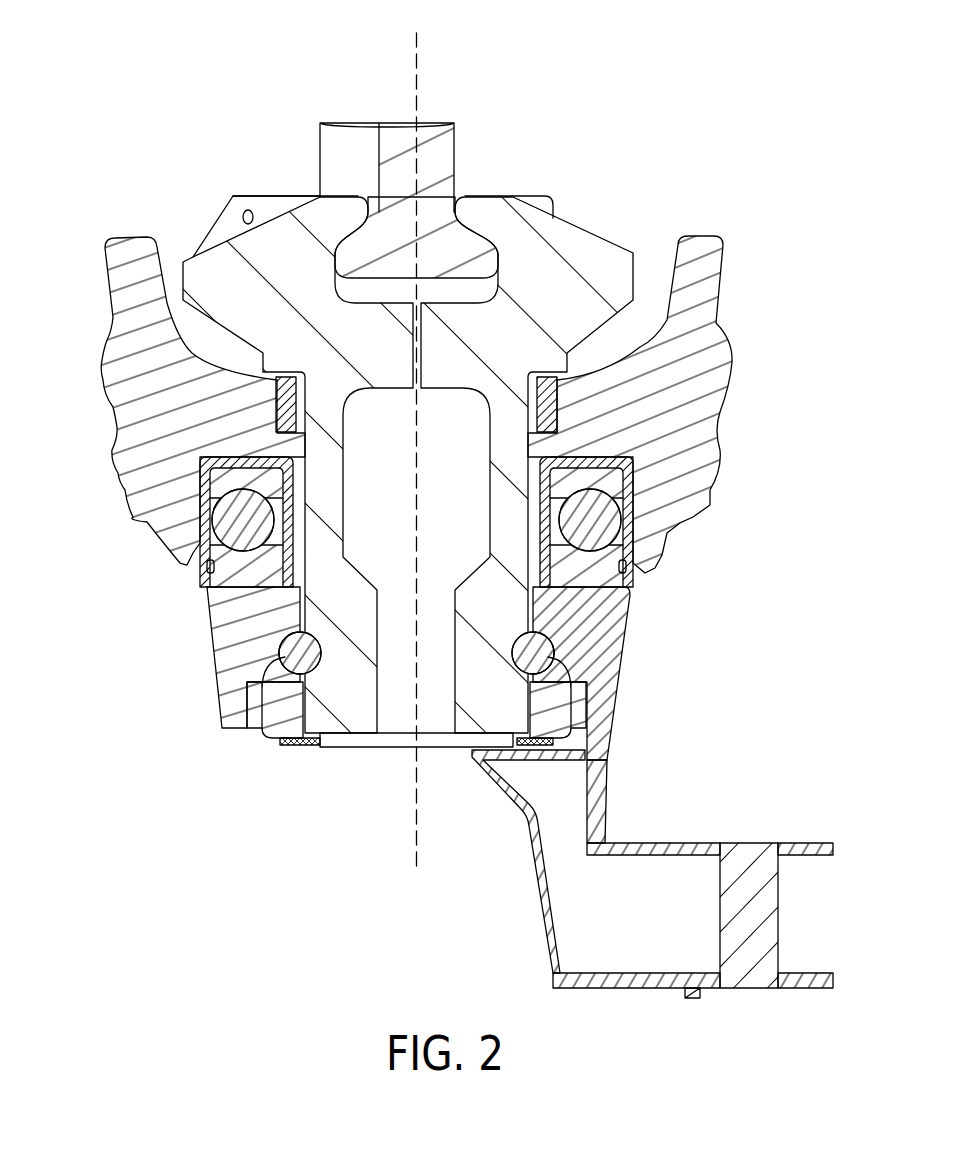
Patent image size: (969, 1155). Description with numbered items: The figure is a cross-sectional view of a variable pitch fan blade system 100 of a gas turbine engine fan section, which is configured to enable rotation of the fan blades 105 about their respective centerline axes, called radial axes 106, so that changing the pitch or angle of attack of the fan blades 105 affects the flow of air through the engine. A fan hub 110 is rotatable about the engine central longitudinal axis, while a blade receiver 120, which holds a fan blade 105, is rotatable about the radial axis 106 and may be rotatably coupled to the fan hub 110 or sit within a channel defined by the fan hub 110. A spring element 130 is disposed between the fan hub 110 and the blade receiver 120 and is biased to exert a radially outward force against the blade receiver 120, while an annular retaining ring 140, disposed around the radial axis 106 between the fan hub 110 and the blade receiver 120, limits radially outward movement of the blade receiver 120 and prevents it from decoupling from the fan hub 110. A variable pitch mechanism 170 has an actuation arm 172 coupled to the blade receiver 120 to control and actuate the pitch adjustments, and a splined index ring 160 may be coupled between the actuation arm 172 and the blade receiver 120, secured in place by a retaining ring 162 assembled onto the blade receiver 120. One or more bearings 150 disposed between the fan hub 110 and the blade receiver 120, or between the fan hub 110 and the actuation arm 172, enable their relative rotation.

The variable pitch fan blade system 100 is at (182, 67).
The fan blade 105 is at (435, 167).
The radial axis 106 is at (415, 86).
The fan hub 110 is at (127, 325).
The blade receiver 120 is at (215, 270).
The spring element 130 is at (272, 383).
The annular retaining ring 140 is at (290, 650).
The bearing 150 is at (203, 568).
The splined index ring 160 is at (543, 710).
The retaining ring 162 is at (299, 748).
The variable pitch mechanism 170 is at (755, 740).
The actuation arm 172 is at (602, 725).